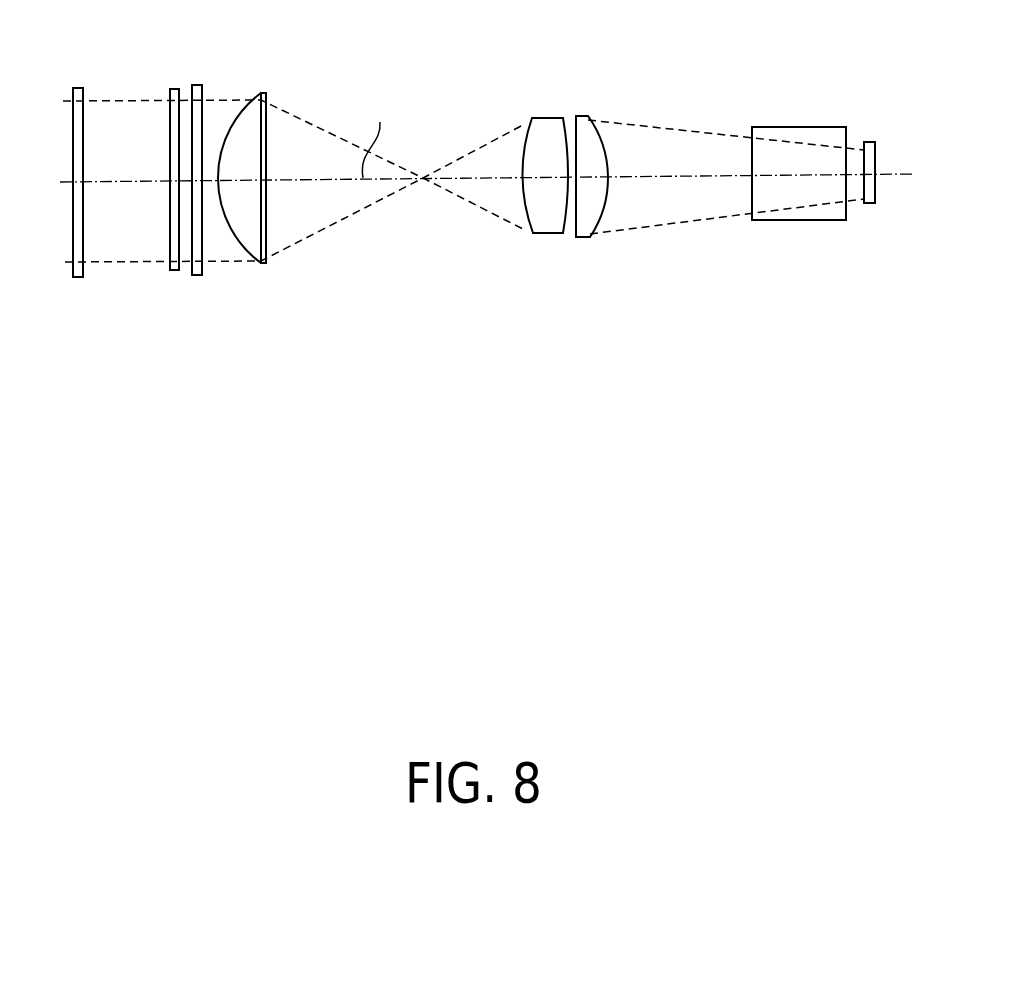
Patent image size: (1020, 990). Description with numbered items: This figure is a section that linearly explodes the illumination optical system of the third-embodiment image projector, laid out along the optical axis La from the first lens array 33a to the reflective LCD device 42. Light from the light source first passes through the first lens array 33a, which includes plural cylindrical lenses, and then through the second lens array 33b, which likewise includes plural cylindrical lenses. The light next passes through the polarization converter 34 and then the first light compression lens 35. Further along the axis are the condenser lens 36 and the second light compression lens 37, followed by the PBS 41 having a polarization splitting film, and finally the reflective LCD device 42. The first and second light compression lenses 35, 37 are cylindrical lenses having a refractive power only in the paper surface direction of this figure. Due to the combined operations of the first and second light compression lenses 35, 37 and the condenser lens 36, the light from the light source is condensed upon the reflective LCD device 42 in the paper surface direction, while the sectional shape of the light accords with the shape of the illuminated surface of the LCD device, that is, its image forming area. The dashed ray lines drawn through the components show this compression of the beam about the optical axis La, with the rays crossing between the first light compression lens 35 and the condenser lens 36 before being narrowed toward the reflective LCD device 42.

The first lens array 33a is at (80, 87).
The second lens array 33b is at (175, 88).
The polarization converter 34 is at (195, 84).
The first light compression lens 35 is at (260, 92).
The condenser lens 36 is at (548, 119).
The second light compression lens 37 is at (578, 117).
The PBS 41 is at (795, 128).
The reflective LCD device 42 is at (868, 141).
The optical axis La is at (363, 178).